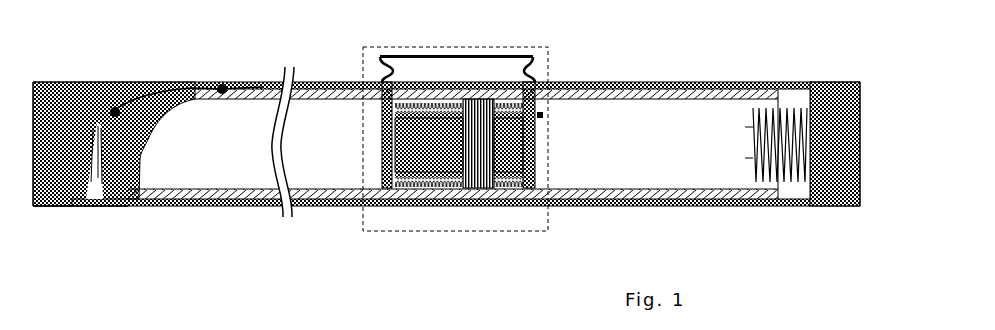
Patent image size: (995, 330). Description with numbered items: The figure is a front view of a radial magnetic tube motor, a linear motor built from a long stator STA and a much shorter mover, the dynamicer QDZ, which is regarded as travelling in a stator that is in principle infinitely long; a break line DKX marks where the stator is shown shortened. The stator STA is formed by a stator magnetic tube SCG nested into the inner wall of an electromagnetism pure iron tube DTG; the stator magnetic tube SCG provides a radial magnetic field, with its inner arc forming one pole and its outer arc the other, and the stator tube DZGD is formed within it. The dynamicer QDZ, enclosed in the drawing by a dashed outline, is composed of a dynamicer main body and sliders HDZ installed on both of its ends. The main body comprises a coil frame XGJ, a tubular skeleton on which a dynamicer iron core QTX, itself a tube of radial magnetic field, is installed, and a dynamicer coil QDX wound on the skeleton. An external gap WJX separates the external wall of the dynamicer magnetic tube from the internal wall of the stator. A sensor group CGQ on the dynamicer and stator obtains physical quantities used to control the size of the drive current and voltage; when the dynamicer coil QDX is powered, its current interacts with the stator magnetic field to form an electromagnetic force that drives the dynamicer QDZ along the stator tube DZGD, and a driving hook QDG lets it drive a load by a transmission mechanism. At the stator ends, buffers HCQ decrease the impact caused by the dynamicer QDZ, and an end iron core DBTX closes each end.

The stator STA is at (93, 81).
The stator magnetic tube SCG is at (133, 132).
The break line DKX is at (285, 67).
The driving hook QDG is at (400, 55).
The external gap WJX is at (413, 102).
The sensor group CGQ is at (543, 114).
The electromagnetism pure iron tube DTG is at (57, 208).
The end iron core DBTX is at (90, 200).
The buffer HCQ is at (140, 178).
The slider HDZ is at (382, 175).
The coil frame XGJ is at (402, 185).
The dynamicer iron core QTX is at (413, 142).
The dynamicer coil QDX is at (462, 128).
The dynamicer QDZ is at (436, 147).
The stator tube DZGD is at (677, 152).